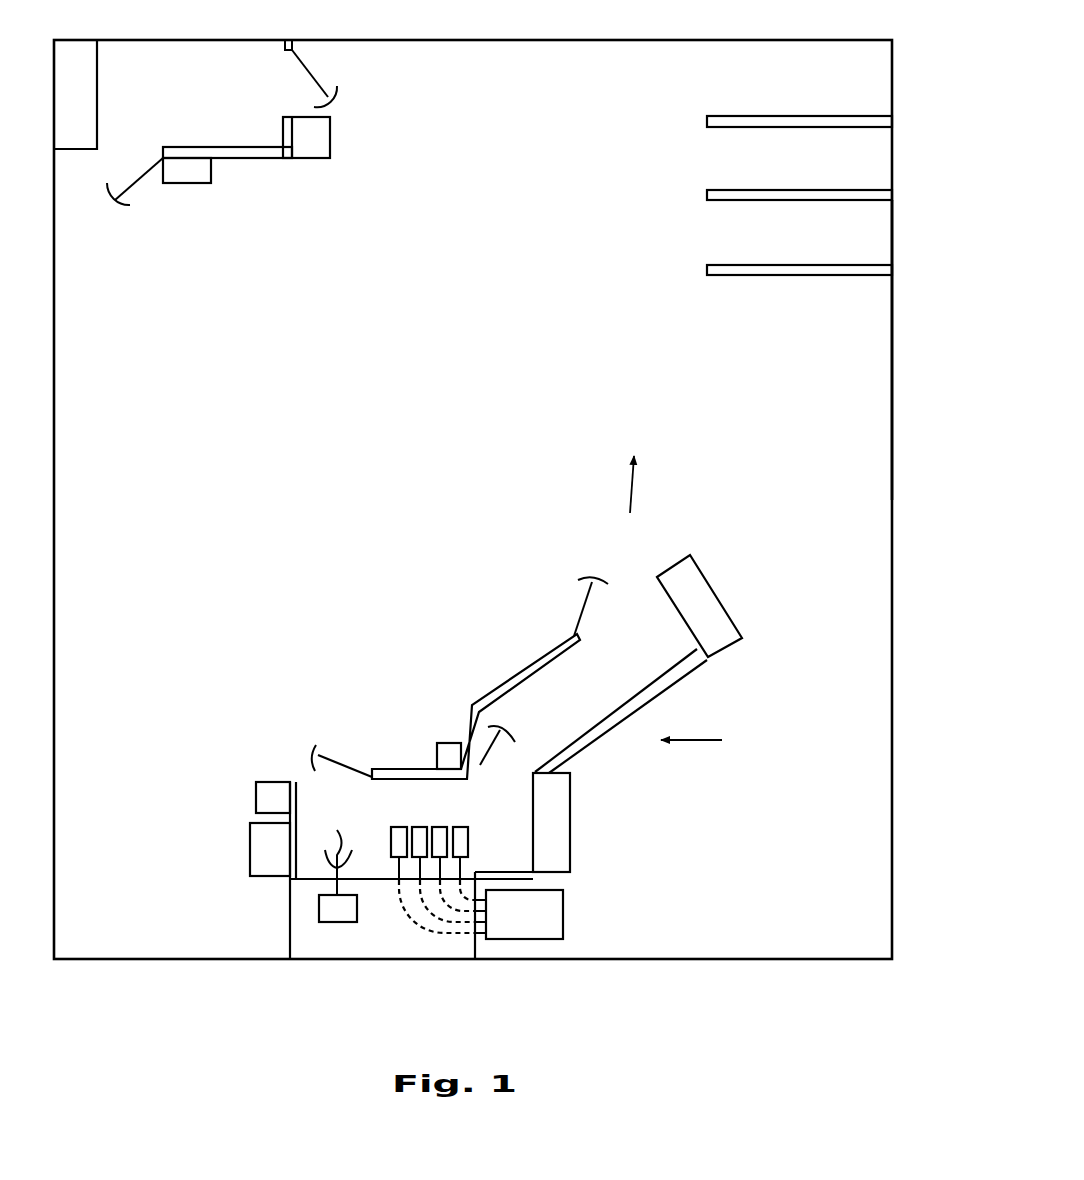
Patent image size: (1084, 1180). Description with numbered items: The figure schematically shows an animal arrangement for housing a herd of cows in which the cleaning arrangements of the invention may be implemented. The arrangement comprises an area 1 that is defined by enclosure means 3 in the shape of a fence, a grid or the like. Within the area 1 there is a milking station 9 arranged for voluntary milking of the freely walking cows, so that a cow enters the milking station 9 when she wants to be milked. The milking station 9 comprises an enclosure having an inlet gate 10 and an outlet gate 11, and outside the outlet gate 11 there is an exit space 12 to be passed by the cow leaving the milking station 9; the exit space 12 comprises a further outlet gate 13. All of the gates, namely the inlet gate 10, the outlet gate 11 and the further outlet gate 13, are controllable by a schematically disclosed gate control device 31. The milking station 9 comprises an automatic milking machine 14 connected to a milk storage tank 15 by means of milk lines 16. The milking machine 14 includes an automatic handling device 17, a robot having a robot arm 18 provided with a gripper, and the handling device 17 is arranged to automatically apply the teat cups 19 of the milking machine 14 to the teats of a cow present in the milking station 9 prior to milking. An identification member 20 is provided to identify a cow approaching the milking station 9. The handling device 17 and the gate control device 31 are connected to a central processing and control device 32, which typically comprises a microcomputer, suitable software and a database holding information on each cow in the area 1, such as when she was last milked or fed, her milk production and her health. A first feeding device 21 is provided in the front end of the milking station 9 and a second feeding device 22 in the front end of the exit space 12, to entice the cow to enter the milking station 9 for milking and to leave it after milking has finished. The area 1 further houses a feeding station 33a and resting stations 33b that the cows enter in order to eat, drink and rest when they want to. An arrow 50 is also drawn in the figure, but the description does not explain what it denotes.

The area 1 is at (97, 940).
The enclosure means 3 is at (892, 330).
The milking station 9 is at (749, 755).
The inlet gate 10 is at (335, 760).
The outlet gate 11 is at (480, 765).
The exit space 12 is at (637, 674).
The further outlet gate 13 is at (588, 597).
The automatic milking machine 14 is at (323, 952).
The milk storage tank 15 is at (566, 915).
The milk lines 16 is at (450, 932).
The automatic handling device 17 is at (342, 922).
The robot arm 18 is at (338, 846).
The teat cups 19 is at (467, 836).
The identification member 20 is at (256, 790).
The first feeding device 21 is at (572, 812).
The second feeding device 22 is at (709, 582).
The gate control device 31 is at (437, 750).
The central processing and control device 32 is at (250, 852).
The feeding station 33a is at (312, 200).
The resting stations 33b is at (692, 98).
The transport direction 50 is at (655, 473).